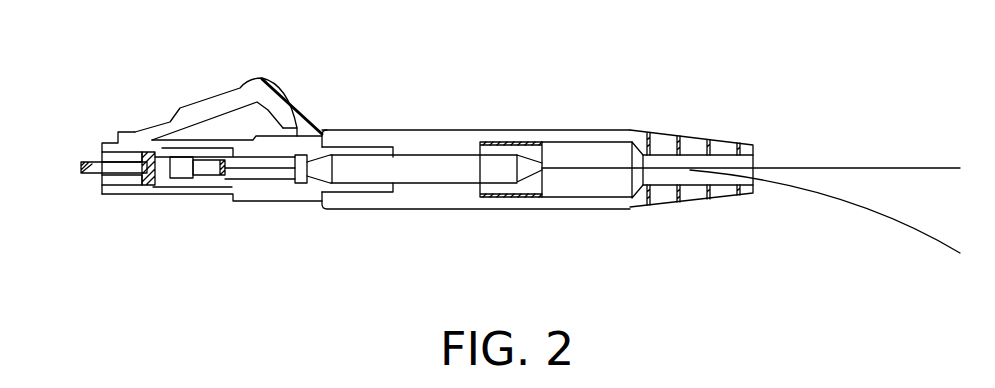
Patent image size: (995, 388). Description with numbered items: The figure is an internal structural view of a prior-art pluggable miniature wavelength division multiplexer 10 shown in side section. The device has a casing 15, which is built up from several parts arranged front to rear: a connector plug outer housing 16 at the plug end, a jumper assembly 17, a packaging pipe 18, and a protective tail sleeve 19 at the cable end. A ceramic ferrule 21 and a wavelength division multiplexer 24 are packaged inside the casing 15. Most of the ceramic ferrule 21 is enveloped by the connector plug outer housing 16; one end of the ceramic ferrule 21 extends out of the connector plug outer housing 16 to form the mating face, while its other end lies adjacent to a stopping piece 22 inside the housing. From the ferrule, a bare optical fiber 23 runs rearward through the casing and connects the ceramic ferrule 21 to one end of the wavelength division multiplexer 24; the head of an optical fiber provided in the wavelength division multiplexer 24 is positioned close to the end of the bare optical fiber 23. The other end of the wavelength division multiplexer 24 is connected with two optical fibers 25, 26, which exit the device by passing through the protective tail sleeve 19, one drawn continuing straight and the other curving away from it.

The pluggable miniature wavelength division multiplexer 10 is at (556, 100).
The casing 15 is at (348, 218).
The connector plug outer housing 16 is at (140, 143).
The jumper assembly 17 is at (305, 130).
The packaging pipe 18 is at (442, 205).
The protective tail sleeve 19 is at (613, 203).
The ceramic ferrule 21 is at (120, 172).
The stopping piece 22 is at (167, 172).
The bare optical fiber 23 is at (273, 170).
The wavelength division multiplexer 24 is at (417, 167).
The optical fiber 25 is at (773, 168).
The optical fiber 26 is at (853, 205).